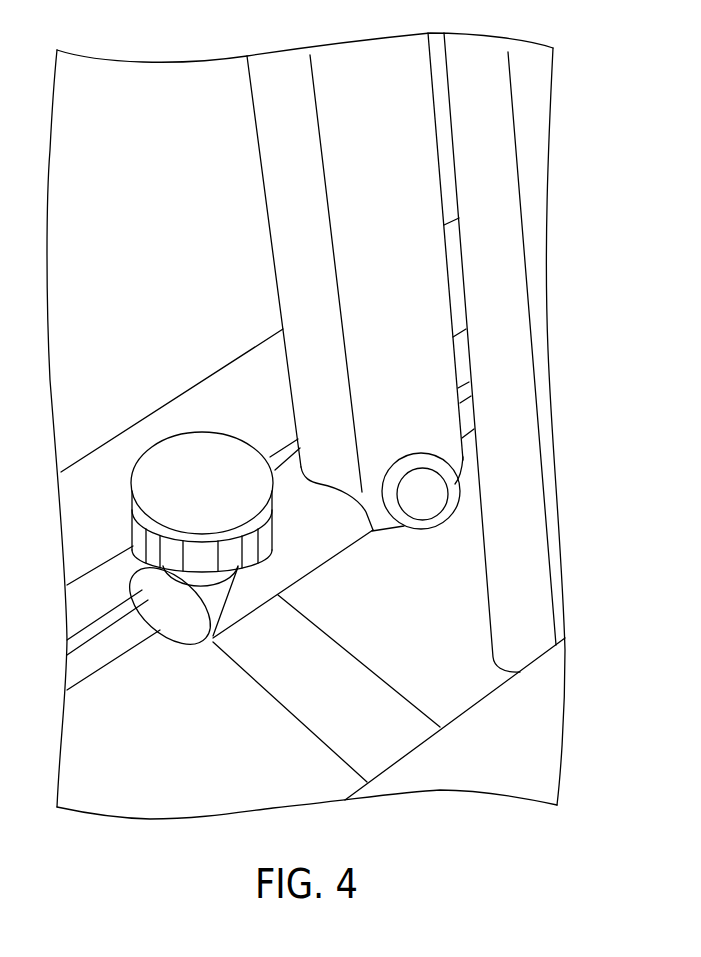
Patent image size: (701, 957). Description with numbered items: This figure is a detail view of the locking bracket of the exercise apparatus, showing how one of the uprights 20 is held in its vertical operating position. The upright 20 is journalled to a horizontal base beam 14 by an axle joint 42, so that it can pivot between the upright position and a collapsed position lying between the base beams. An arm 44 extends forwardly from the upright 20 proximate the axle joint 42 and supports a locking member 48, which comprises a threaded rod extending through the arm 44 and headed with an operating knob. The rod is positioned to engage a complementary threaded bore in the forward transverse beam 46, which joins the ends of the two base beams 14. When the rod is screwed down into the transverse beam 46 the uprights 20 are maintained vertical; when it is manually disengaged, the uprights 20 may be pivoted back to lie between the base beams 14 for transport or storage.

The horizontal beam 14 is at (96, 471).
The upright 20 is at (276, 145).
The axle joint 42 is at (423, 507).
The arm 44 is at (319, 550).
The transverse beam 46 is at (288, 699).
The locking member 48 is at (210, 449).